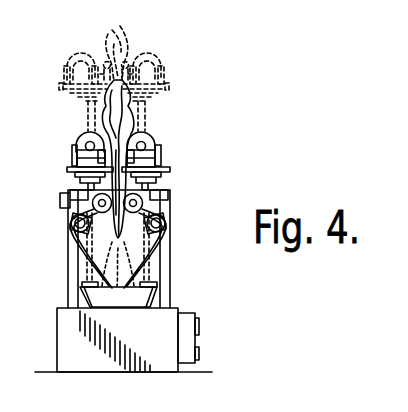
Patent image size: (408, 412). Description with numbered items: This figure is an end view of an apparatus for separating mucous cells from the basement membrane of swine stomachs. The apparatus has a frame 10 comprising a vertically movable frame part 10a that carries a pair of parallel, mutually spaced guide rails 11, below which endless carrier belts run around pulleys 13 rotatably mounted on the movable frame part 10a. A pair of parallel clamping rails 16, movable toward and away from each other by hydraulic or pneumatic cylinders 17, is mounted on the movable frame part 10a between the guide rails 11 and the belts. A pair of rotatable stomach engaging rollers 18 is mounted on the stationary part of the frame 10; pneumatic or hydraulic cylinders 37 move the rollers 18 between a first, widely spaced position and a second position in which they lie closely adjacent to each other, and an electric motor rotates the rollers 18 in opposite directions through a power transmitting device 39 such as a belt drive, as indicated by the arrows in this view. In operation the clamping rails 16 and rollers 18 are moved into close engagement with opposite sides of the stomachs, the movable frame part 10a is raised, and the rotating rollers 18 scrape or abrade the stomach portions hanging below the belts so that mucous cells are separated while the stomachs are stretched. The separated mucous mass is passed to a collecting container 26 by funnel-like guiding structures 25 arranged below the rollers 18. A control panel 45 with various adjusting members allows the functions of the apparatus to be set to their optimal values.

The frame 10 is at (170, 300).
The vertically movable frame part 10a is at (169, 169).
The guide rails 11 is at (99, 140).
The pulleys 13 is at (161, 176).
The clamping rails 16 is at (131, 146).
The hydraulic or pneumatic cylinders 17 is at (73, 154).
The stomach engaging rollers 18 is at (162, 229).
The funnel-like guiding structures 25 is at (170, 282).
The collecting container 26 is at (86, 301).
The pneumatic or hydraulic cylinders 37 is at (75, 200).
The power transmitting device 39 is at (72, 241).
The control panel 45 is at (188, 338).